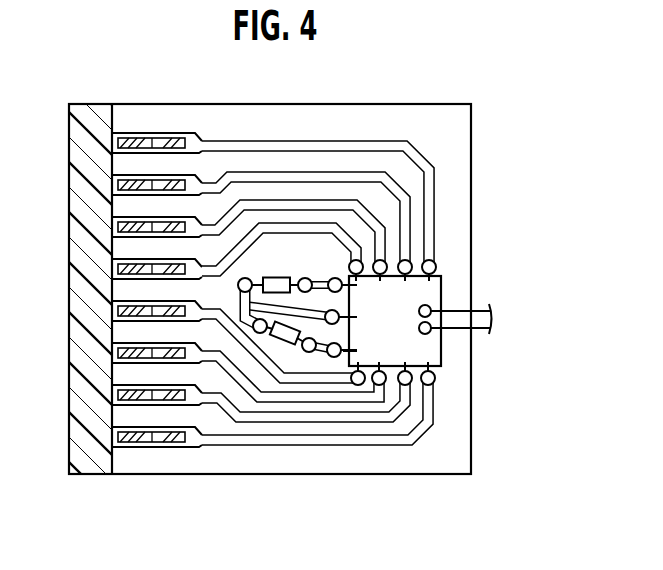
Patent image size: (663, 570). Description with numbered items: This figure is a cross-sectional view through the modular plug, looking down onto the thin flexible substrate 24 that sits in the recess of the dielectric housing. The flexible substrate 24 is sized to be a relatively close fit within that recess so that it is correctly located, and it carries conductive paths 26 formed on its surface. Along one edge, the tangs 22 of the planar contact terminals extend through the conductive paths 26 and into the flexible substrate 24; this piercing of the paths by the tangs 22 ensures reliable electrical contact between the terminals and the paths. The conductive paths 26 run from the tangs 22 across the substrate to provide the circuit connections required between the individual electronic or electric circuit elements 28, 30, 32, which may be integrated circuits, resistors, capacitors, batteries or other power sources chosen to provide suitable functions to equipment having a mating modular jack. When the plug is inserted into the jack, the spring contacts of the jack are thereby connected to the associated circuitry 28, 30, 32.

The tangs 22 is at (170, 445).
The flexible substrate 24 is at (364, 475).
The conductive paths 26 is at (219, 441).
The circuit element 28 is at (428, 288).
The circuit element 30 is at (275, 278).
The circuit element 32 is at (286, 342).